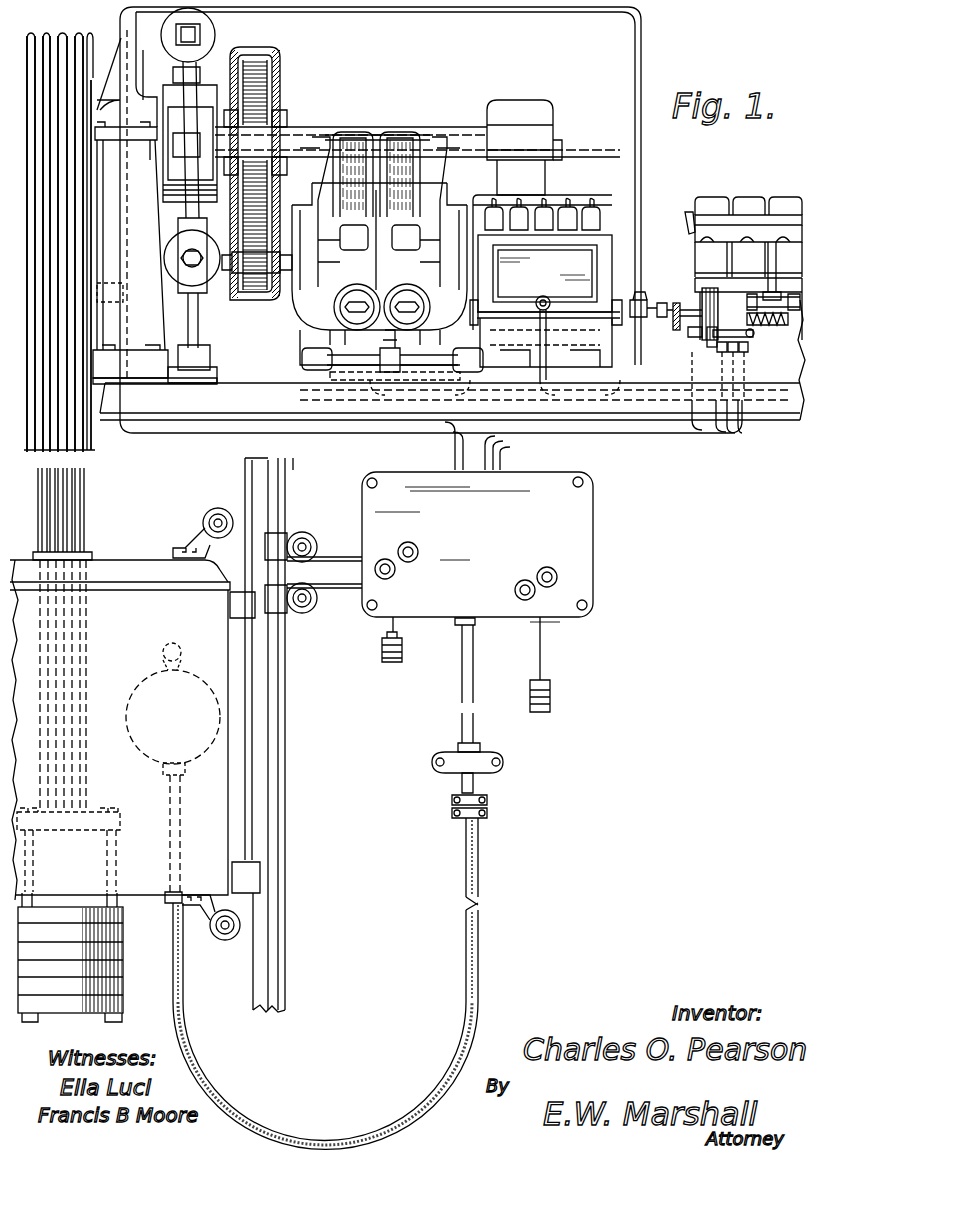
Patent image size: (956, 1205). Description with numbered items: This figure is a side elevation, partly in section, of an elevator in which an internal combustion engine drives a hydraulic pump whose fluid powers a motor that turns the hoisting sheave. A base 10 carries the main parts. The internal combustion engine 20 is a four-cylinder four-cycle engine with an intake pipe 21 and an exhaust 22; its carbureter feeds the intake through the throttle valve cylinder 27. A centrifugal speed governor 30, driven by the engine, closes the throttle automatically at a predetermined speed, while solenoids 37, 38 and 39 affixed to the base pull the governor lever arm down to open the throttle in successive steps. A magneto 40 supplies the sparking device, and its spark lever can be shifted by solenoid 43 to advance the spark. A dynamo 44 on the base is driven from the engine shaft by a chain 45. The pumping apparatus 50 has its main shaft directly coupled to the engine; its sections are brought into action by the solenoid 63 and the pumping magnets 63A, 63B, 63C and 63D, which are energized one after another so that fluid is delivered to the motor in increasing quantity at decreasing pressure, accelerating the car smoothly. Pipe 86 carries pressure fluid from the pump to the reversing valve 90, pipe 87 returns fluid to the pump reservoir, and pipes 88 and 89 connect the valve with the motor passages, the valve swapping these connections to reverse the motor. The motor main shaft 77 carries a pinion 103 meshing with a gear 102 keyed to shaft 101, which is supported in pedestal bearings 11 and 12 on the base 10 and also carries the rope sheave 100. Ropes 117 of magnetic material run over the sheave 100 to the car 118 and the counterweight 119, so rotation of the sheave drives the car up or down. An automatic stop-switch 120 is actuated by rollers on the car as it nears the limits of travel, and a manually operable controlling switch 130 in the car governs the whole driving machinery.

The rope sheave 100 is at (97, 25).
The shaft 101 is at (295, 140).
The gear 102 is at (258, 100).
The pinion 103 is at (265, 275).
The base 10 is at (332, 200).
The pedestal bearing 11 is at (133, 232).
The pedestal bearing 12 is at (530, 112).
The main shaft 77 is at (233, 262).
The pipe 89 is at (323, 338).
The pipe 88 is at (387, 345).
The reversing valve 90 is at (387, 355).
The pipe 87 is at (547, 352).
The pipe 86 is at (573, 390).
The solenoid 63 is at (487, 217).
The pumping magnet 63A is at (517, 213).
The pumping magnet 63B is at (547, 210).
The pumping magnet 63C is at (565, 212).
The pumping magnet 63D is at (590, 215).
The pumping apparatus 50 is at (597, 237).
The internal combustion engine 20 is at (767, 186).
The exhaust 22 is at (705, 213).
The intake pipe 21 is at (775, 264).
The throttle valve cylinder 27 is at (766, 300).
The centrifugal speed governor 30 is at (770, 323).
The magneto 40 is at (700, 288).
The dynamo 44 is at (647, 303).
The chain 45 is at (690, 307).
The solenoid 43 is at (695, 330).
The solenoid 37 is at (720, 347).
The solenoid 38 is at (728, 347).
The solenoid 39 is at (743, 343).
The ropes 117 is at (93, 440).
The car 118 is at (117, 572).
The counterweight 119 is at (60, 1005).
The automatic stop-switch 120 is at (570, 532).
The controlling switch 130 is at (147, 680).